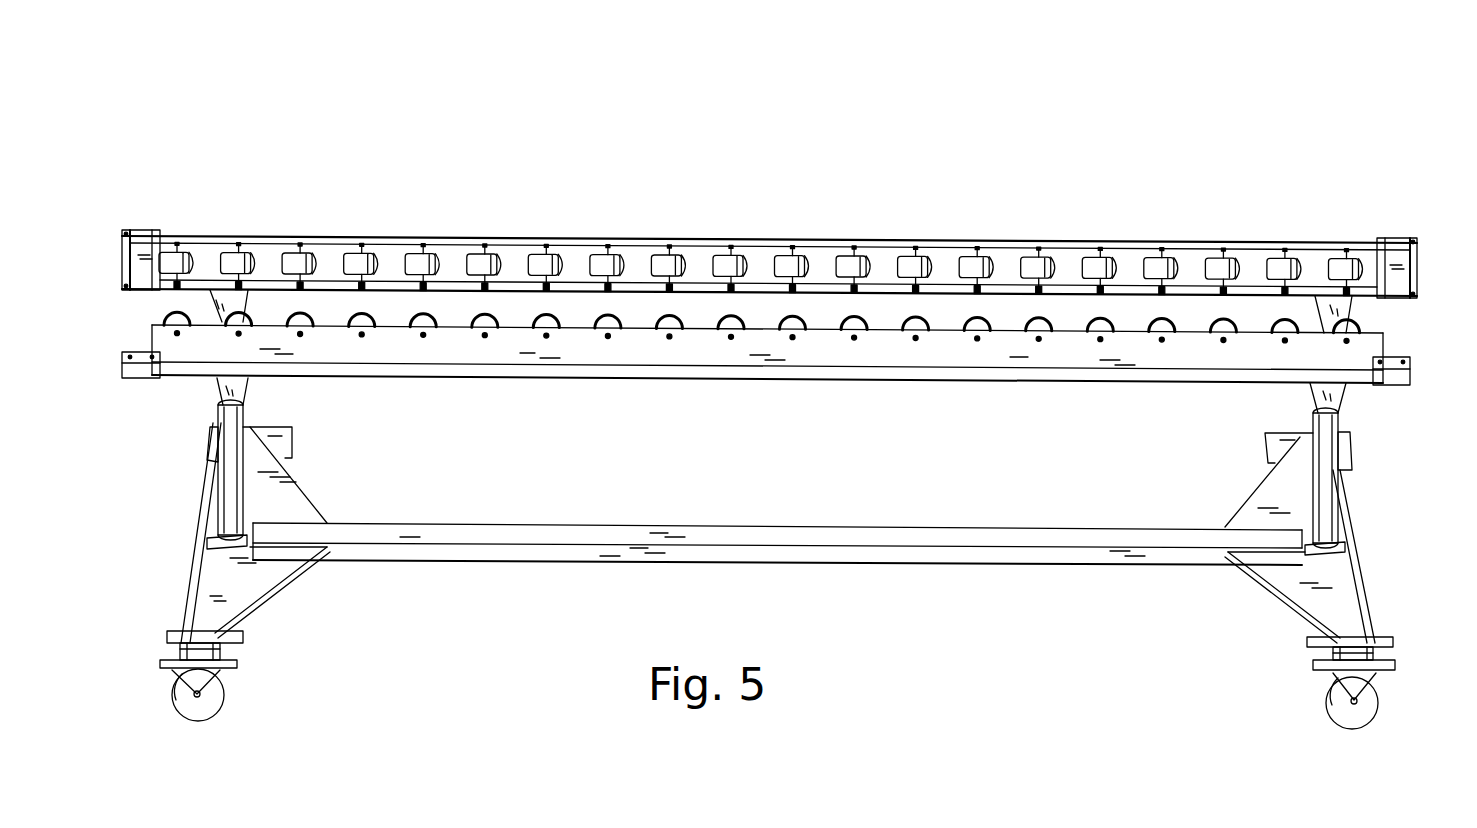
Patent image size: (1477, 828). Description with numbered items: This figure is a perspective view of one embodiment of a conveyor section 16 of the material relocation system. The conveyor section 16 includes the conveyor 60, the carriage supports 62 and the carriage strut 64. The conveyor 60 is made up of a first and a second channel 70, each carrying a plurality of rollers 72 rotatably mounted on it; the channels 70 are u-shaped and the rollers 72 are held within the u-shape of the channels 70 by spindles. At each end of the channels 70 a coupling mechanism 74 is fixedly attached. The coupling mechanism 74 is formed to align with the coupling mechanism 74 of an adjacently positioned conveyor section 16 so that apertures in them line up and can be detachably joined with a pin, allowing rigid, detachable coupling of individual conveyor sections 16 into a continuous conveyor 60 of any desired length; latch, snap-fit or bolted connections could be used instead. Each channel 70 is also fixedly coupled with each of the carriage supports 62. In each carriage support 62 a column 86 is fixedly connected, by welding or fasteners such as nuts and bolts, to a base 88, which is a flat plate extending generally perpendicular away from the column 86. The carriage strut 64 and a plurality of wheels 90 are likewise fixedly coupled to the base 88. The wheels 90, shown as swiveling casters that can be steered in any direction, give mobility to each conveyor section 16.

The conveyor section 16 is at (1204, 122).
The conveyor 60 is at (1417, 232).
The carriage support 62 is at (188, 548).
The carriage strut 64 is at (1000, 555).
The channel 70 is at (620, 238).
The roller 72 is at (300, 250).
The coupling mechanism 74 is at (140, 236).
The column 86 is at (228, 472).
The base 88 is at (263, 580).
The wheel 90 is at (192, 722).